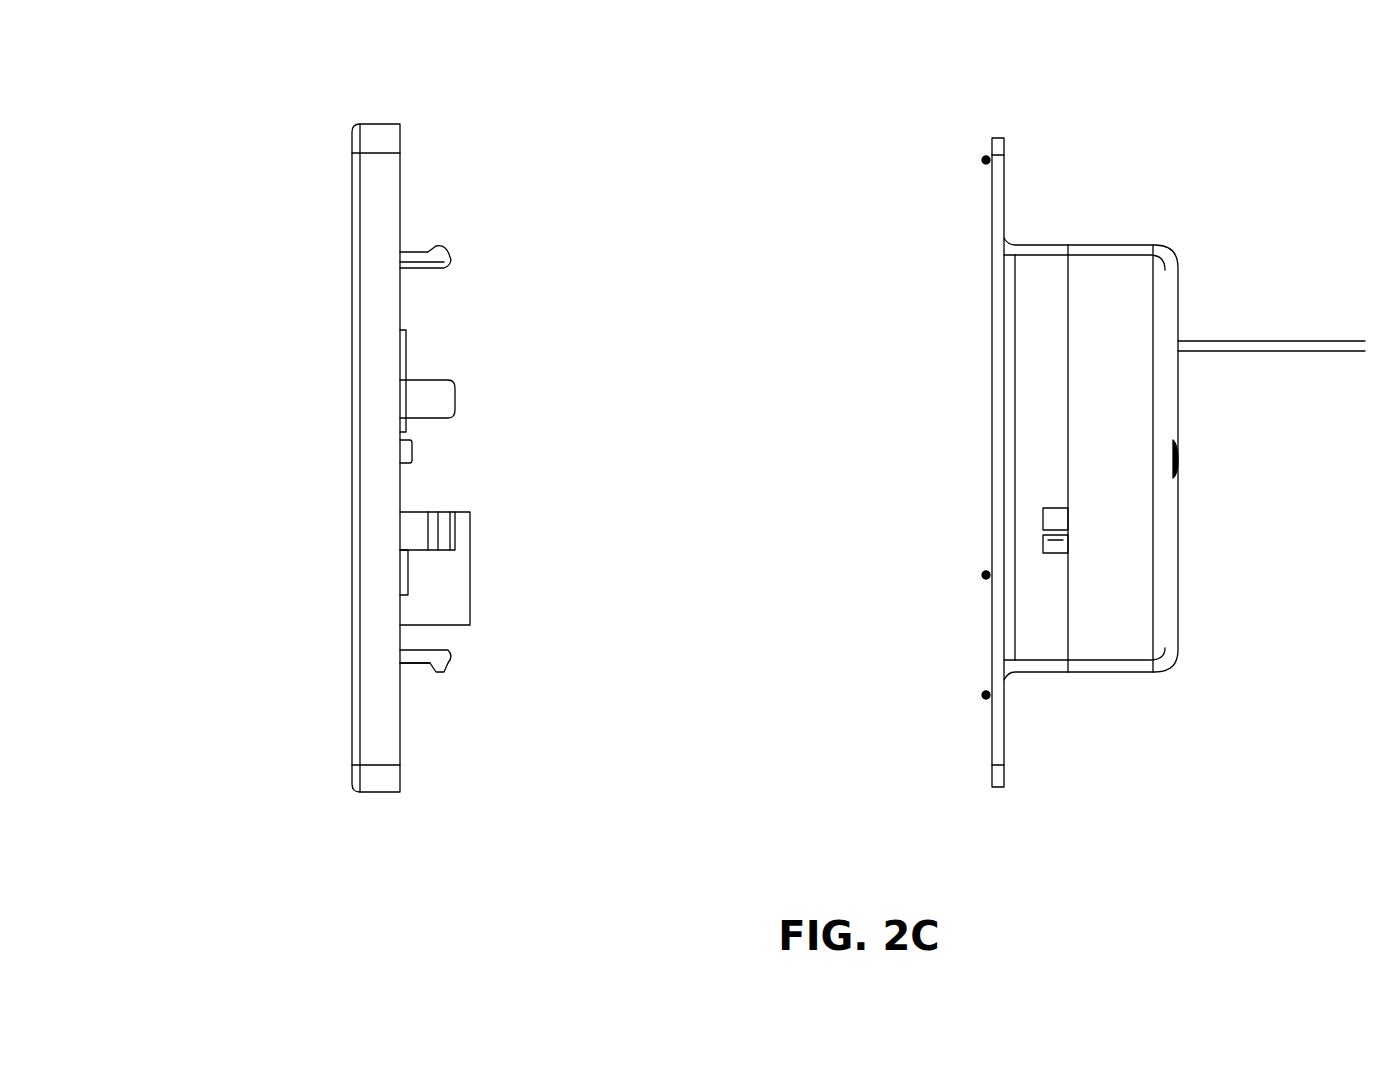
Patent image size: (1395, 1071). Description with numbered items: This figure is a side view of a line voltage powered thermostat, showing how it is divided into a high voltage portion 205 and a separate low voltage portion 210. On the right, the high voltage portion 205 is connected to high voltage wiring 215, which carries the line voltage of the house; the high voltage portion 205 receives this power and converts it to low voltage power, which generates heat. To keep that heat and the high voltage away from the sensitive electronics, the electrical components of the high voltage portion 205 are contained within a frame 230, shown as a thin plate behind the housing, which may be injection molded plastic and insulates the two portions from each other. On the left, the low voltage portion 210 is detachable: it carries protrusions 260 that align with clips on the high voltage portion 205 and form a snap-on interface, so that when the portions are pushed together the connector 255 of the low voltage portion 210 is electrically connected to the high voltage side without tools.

The low voltage portion 210 is at (373, 777).
The protrusions 260 is at (452, 268).
The connector 255 is at (462, 615).
The frame 230 is at (995, 138).
The high voltage portion 205 is at (1093, 675).
The high voltage wiring 215 is at (1350, 338).